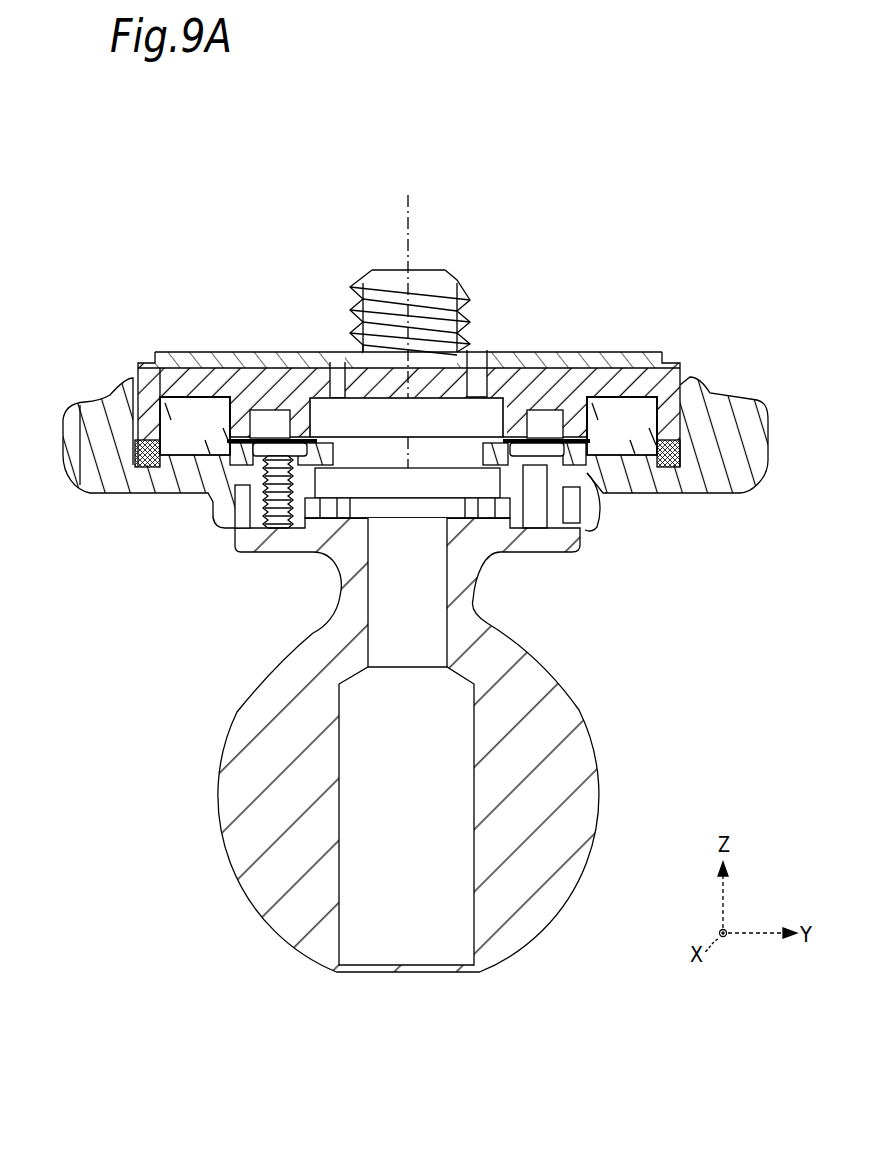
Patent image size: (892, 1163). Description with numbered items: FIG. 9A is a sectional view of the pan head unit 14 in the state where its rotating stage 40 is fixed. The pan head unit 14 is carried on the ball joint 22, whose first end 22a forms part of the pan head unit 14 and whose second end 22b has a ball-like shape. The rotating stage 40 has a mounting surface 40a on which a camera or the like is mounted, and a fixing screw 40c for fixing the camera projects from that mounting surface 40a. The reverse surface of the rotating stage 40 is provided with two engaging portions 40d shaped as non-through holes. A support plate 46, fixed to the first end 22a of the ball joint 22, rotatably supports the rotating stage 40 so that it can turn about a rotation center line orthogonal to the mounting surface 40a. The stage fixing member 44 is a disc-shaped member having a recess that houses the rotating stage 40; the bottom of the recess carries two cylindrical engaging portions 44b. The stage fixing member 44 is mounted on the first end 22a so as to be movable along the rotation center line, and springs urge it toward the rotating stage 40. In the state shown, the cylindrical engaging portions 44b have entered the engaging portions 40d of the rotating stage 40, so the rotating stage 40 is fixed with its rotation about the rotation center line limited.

The pan head unit 14 is at (82, 249).
The ball joint 22 is at (418, 745).
The first end 22a is at (548, 545).
The second end (ball portion) 22b is at (575, 705).
The rotating stage 40 is at (382, 361).
The mounting surface 40a is at (280, 348).
The fixing screw 40c is at (458, 297).
The engaging portions 40d is at (205, 397).
The stage fixing member 44 is at (415, 434).
The cylindrical engaging portions 44b is at (212, 450).
The support plate 46 is at (583, 472).